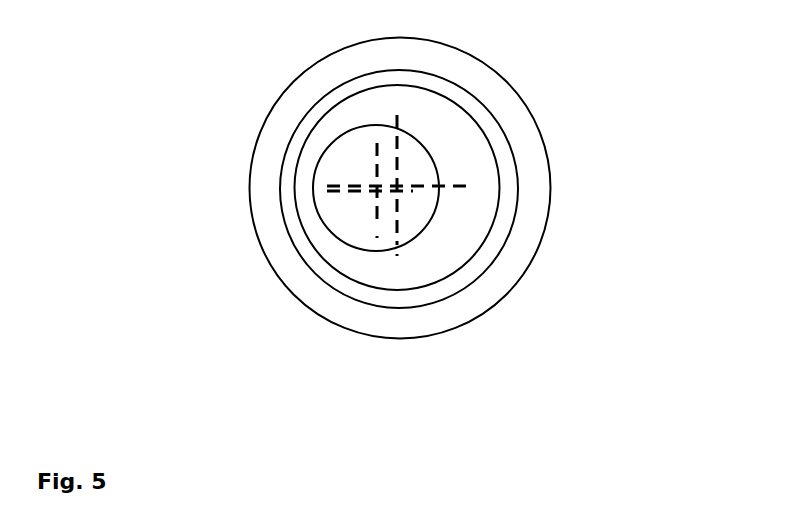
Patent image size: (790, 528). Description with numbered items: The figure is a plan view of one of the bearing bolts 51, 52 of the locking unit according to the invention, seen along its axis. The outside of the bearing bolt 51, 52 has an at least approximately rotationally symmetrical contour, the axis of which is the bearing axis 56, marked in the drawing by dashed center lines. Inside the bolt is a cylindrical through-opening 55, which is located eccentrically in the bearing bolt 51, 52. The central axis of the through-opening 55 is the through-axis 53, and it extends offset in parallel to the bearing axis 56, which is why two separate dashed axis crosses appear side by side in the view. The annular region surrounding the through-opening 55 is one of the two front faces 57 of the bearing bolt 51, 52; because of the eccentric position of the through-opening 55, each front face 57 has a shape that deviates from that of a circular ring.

The bearing bolt 51 is at (208, 46).
The bearing bolt 52 is at (399, 189).
The through-axis 53 is at (377, 188).
The through-opening 55 is at (413, 217).
The bearing axis 56 is at (410, 187).
The front face 57 is at (447, 127).